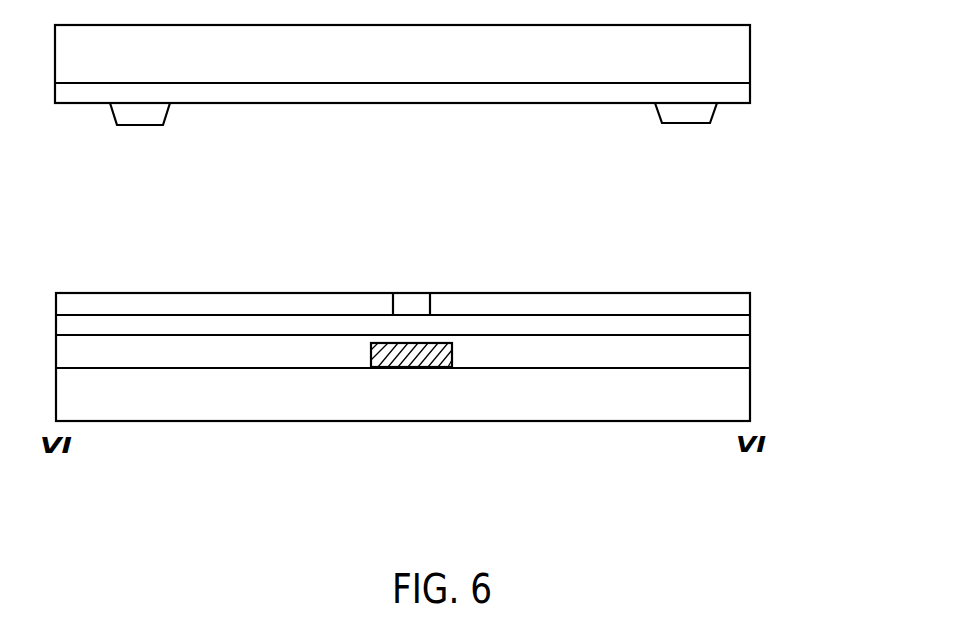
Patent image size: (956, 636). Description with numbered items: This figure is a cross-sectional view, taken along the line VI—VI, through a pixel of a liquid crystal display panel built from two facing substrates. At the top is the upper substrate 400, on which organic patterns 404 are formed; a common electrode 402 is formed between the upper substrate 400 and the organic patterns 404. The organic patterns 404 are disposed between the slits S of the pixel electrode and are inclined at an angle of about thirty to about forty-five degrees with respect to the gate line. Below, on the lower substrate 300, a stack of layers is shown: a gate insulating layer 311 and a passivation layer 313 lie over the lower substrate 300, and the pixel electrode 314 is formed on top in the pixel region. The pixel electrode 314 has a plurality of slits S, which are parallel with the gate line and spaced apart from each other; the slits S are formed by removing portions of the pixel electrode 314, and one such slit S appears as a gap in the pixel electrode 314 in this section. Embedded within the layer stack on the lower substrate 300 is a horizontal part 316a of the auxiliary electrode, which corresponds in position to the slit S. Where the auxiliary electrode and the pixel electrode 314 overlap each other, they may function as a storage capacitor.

The upper substrate 400 is at (720, 61).
The common electrode 402 is at (604, 97).
The organic patterns 404 is at (140, 118).
The lower substrate 300 is at (714, 406).
The gate insulating layer 311 is at (728, 356).
The passivation layer 313 is at (733, 320).
The pixel electrode 314 is at (222, 290).
The horizontal parts of auxiliary electrode 316a is at (408, 359).
The slits S is at (414, 288).